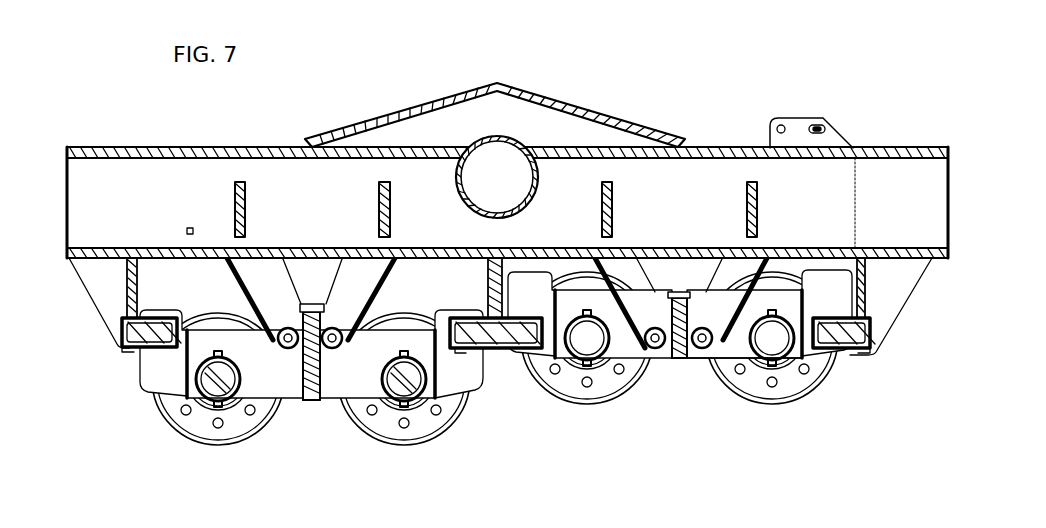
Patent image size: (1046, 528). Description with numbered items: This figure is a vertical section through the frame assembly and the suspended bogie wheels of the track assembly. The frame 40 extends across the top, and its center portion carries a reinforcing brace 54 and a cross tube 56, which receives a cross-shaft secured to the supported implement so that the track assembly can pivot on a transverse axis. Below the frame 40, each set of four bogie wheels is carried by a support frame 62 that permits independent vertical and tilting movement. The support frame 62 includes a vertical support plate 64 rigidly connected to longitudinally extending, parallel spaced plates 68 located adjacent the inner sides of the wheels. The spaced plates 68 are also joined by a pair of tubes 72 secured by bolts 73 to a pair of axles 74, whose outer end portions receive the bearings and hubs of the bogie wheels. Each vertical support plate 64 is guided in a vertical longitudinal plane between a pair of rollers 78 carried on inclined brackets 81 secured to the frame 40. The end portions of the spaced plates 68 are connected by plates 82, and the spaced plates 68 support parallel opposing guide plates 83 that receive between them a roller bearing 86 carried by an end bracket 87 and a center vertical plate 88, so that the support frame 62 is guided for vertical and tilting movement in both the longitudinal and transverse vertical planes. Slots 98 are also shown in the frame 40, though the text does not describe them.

The frame 40 is at (265, 142).
The reinforcing brace 54 is at (438, 98).
The cross tube 56 is at (512, 138).
The support frame 62 is at (300, 403).
The vertical support plate 64 is at (317, 387).
The spaced plates 68 is at (265, 380).
The tubes 72 is at (197, 395).
The bolts 73 is at (218, 350).
The axles 74 is at (197, 378).
The rollers 78 is at (332, 322).
The inclined brackets 81 is at (370, 272).
The plates 82 is at (800, 360).
The guide plates 83 is at (523, 297).
The roller bearing 86 is at (523, 355).
The end bracket 87 is at (108, 287).
The center vertical plate 88 is at (490, 287).
The slot 98 is at (377, 198).